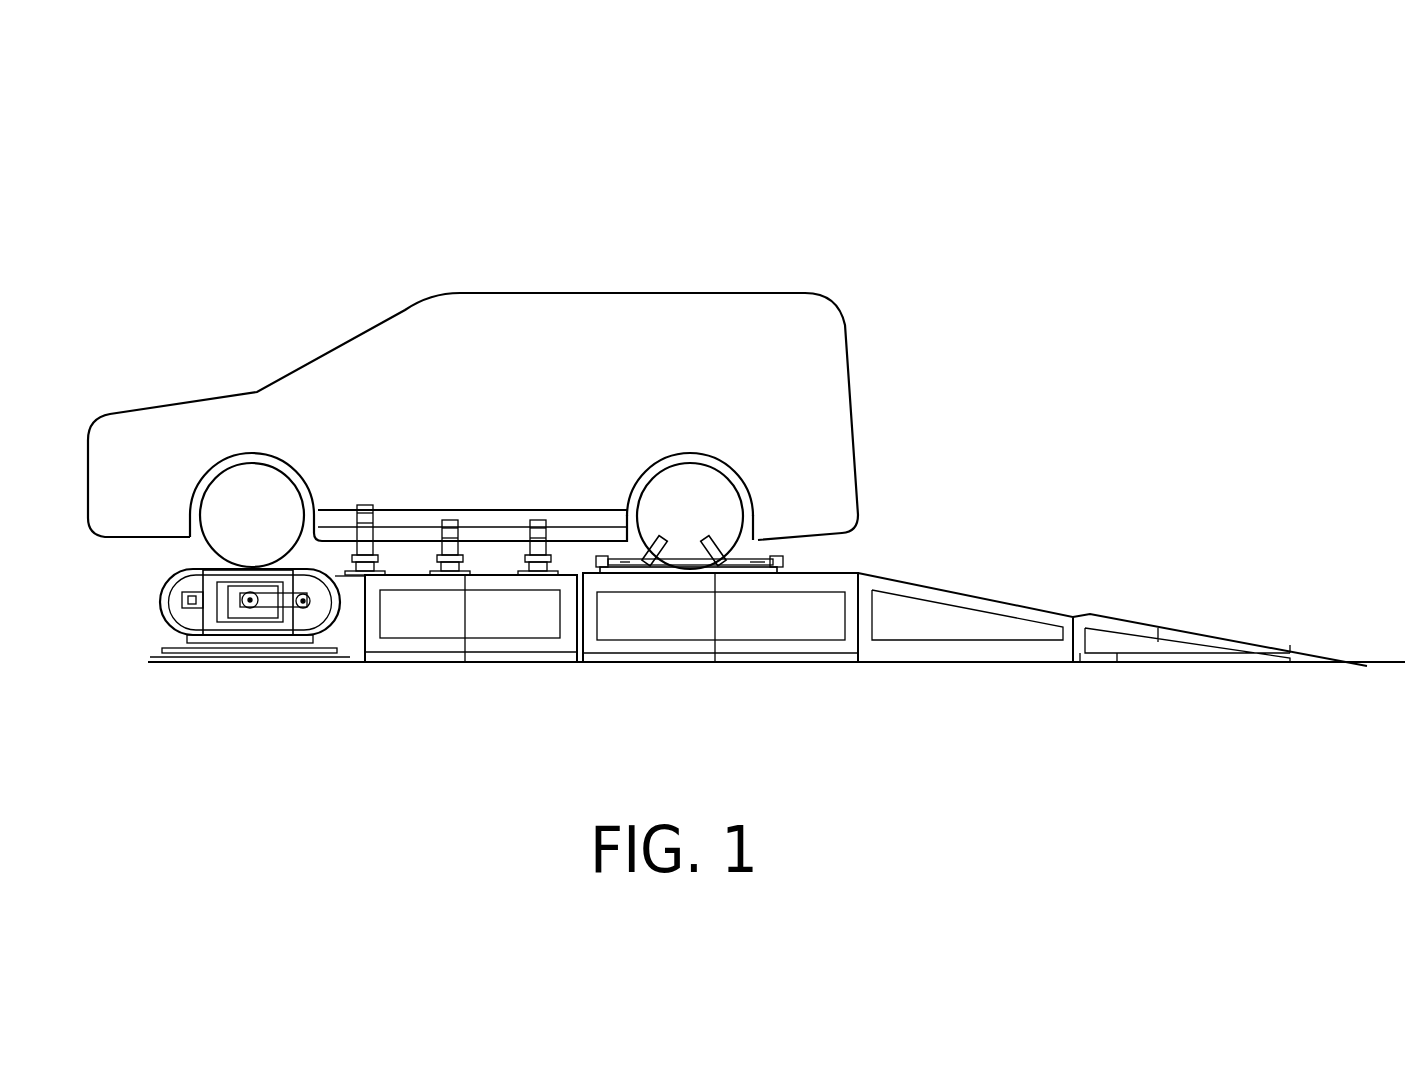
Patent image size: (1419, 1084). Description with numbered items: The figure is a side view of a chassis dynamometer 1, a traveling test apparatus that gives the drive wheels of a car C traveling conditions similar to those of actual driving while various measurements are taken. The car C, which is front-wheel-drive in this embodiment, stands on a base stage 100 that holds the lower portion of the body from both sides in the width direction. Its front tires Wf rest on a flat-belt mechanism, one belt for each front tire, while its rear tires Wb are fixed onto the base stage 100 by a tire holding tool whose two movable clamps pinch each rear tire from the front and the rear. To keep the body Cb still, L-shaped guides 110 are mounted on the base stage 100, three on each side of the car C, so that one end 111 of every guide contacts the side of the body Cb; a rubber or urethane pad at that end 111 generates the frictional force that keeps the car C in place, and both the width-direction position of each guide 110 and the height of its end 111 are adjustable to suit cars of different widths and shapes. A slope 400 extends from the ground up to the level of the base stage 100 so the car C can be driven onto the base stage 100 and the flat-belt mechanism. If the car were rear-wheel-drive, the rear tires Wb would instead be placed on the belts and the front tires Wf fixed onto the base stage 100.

The chassis dynamometer 1 is at (1013, 240).
The car C is at (621, 272).
The body Cb is at (736, 292).
The front tires Wf is at (224, 458).
The rear tires Wb is at (734, 500).
The base stage 100 is at (673, 648).
The L-shaped guides 110 is at (486, 554).
The end 111 is at (537, 515).
The slope 400 is at (1228, 637).